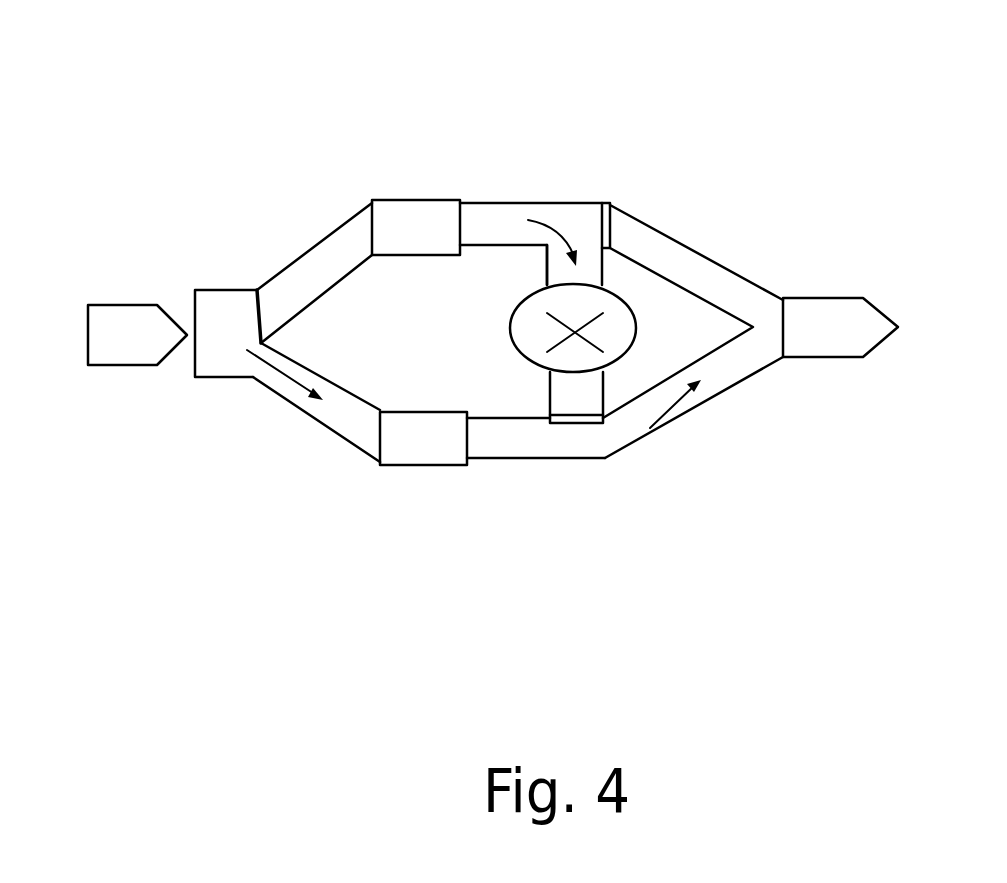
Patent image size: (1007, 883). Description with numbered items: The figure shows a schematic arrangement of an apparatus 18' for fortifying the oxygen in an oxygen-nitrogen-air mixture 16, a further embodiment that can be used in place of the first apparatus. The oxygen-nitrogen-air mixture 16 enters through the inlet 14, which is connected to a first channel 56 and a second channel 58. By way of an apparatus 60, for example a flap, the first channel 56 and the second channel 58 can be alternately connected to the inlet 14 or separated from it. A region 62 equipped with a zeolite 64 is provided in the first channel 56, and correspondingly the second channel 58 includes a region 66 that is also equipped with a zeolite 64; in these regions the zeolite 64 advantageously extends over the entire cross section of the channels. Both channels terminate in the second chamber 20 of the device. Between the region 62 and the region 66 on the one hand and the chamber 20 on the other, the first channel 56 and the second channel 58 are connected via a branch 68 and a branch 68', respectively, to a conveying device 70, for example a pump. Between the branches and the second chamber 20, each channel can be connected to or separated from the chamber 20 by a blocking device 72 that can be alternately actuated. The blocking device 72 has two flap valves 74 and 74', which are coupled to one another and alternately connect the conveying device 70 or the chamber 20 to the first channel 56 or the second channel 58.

The inlet 14 is at (207, 380).
The oxygen-nitrogen-air mixture 16 is at (118, 368).
The apparatus 18' is at (251, 81).
The second chamber 20 is at (837, 345).
The first channel 56 is at (300, 256).
The second channel 58 is at (305, 413).
The apparatus 60 is at (257, 307).
The region 62 is at (413, 198).
The zeolite 64 is at (447, 212).
The region 66 is at (407, 467).
The branch 68 is at (515, 265).
The branch 68' is at (525, 375).
The conveying device 70 is at (512, 315).
The blocking device 72 is at (622, 205).
The flap valve 74 is at (548, 172).
The flap valve 74' is at (611, 480).